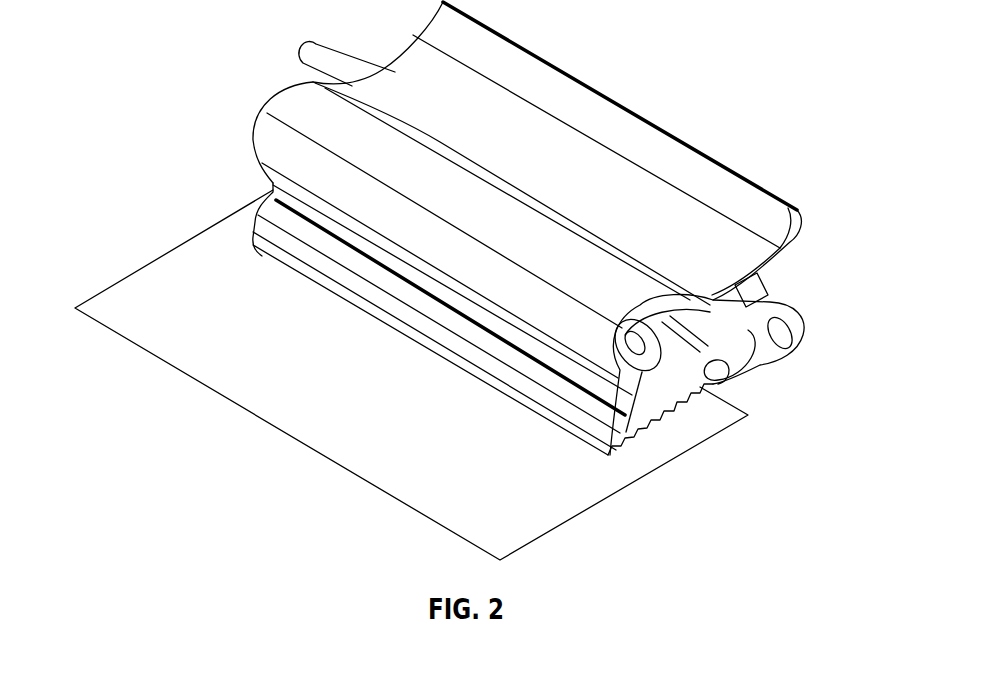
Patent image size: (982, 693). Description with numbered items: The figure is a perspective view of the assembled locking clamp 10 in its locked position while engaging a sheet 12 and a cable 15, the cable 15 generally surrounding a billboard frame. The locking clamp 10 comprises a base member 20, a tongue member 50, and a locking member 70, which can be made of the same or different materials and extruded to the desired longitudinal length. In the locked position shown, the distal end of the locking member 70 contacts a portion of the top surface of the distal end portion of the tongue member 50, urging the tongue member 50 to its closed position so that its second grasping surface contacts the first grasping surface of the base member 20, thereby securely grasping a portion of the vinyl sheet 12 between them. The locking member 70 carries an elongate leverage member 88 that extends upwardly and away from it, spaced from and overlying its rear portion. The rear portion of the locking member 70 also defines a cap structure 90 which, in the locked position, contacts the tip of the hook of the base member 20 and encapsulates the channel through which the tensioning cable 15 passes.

The locking clamp 10 is at (715, 75).
The sheet 12 is at (227, 314).
The cable 15 is at (300, 59).
The base member 20 is at (768, 365).
The tongue member 50 is at (576, 408).
The locking member 70 is at (254, 139).
The leverage member 88 is at (790, 240).
The cap structure 90 is at (774, 289).